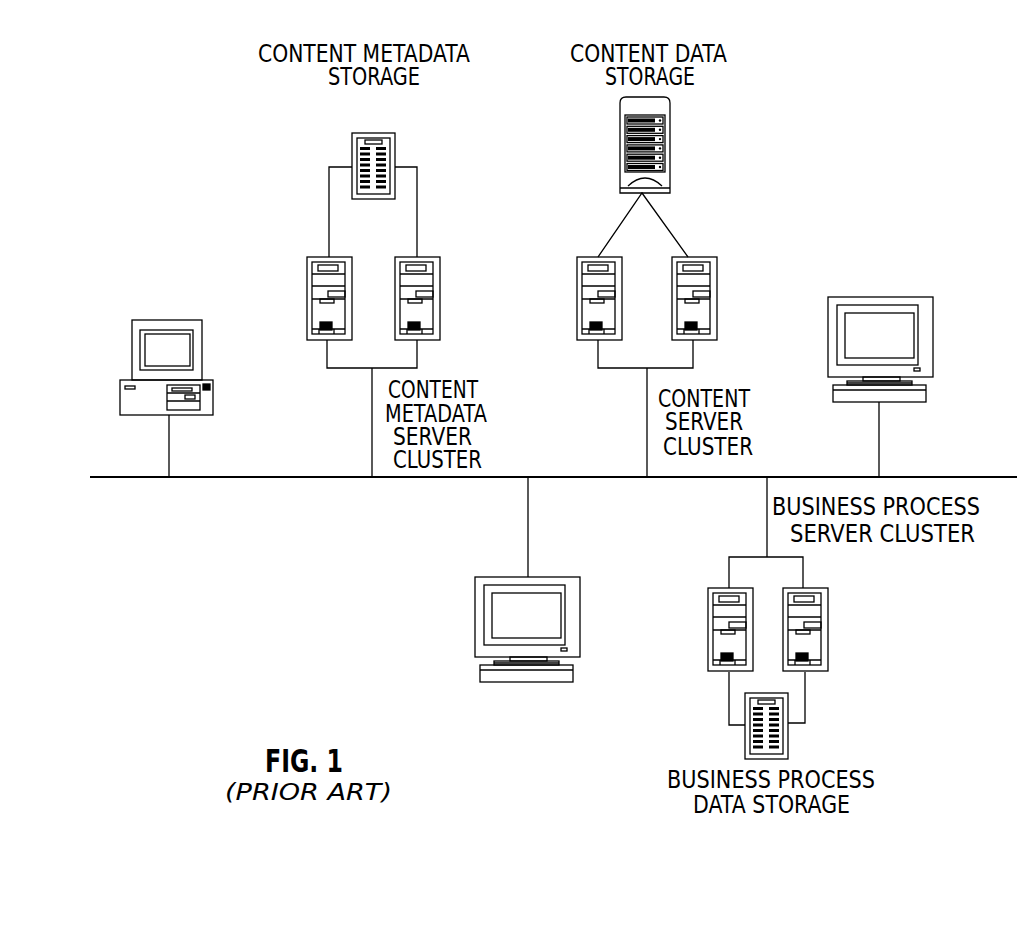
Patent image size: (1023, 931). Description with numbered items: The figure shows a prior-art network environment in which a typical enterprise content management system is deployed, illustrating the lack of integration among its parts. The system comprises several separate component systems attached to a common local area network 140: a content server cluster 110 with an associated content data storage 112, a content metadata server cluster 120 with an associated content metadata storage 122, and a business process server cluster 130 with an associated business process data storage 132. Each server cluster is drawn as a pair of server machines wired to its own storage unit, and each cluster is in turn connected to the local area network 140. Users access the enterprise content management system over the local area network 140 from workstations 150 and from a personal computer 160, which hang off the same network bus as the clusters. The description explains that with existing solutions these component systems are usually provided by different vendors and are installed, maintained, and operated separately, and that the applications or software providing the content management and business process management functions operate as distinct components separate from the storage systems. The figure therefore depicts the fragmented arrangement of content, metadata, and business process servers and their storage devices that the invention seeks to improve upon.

The content server cluster 110 is at (723, 273).
The content data storage 112 is at (675, 133).
The content metadata server cluster 120 is at (443, 274).
The content metadata storage 122 is at (400, 126).
The business process server cluster 130 is at (832, 622).
The business process data storage 132 is at (800, 742).
The local area network 140 is at (237, 478).
The workstation 150 is at (893, 292).
The personal computer 160 is at (172, 313).